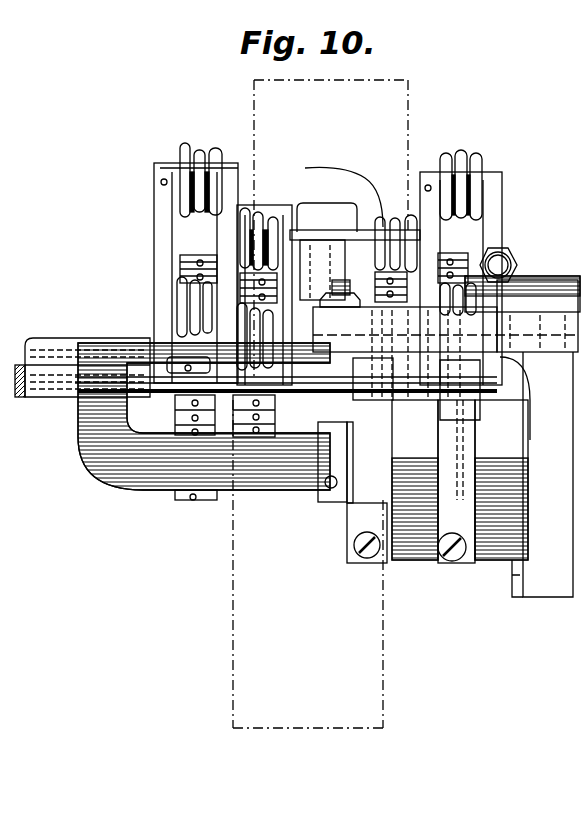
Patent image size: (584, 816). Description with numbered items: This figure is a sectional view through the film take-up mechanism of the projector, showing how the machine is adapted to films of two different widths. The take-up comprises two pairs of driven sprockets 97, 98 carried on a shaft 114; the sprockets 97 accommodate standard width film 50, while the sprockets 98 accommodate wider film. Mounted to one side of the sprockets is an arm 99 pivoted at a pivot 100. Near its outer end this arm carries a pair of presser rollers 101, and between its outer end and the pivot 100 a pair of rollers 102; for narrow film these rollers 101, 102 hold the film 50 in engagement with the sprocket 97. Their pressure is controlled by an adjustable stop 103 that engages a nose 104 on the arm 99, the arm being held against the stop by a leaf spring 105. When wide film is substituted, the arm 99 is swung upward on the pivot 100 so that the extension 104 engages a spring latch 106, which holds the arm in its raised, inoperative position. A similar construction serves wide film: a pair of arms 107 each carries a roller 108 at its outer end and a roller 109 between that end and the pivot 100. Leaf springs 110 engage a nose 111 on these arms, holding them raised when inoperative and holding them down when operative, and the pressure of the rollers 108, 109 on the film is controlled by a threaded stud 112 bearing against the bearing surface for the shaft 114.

The standard width film 50 is at (232, 603).
The driven sprockets 97 is at (363, 426).
The driven sprockets 98 is at (457, 253).
The arm 99 is at (317, 233).
The pivot 100 is at (75, 368).
The presser rollers 101 is at (263, 217).
The rollers 102 is at (362, 290).
The adjustable stop 103 is at (310, 386).
The nose 104 is at (367, 420).
The leaf spring 105 is at (360, 507).
The spring latch 106 is at (327, 467).
The arms 107 is at (158, 200).
The roller 108 is at (193, 158).
The roller 109 is at (180, 292).
The leaf springs 110 is at (480, 443).
The nose 111 is at (478, 422).
The threaded stud 112 is at (507, 249).
The shaft 114 is at (60, 341).